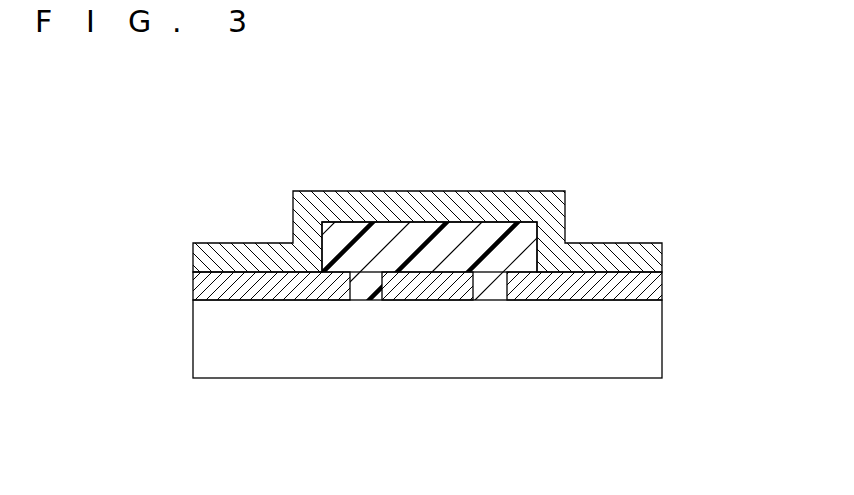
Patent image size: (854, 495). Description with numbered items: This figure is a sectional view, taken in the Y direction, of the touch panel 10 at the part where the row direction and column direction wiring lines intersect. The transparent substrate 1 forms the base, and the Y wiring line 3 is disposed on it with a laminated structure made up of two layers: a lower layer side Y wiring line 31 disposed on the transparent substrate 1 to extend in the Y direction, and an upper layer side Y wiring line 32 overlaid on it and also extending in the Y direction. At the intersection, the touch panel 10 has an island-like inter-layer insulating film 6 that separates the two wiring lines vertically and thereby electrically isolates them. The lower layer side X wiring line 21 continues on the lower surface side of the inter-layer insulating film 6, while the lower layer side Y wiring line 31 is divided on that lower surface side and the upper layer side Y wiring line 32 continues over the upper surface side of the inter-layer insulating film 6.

The touch panel 10 is at (632, 162).
The transparent substrate 1 is at (647, 343).
The Y wiring line 3 is at (724, 238).
The lower layer side Y wiring line 31 is at (649, 288).
The upper layer side Y wiring line 32 is at (649, 260).
The inter-layer insulating film 6 is at (365, 253).
The lower layer side X wiring line 21 is at (453, 282).